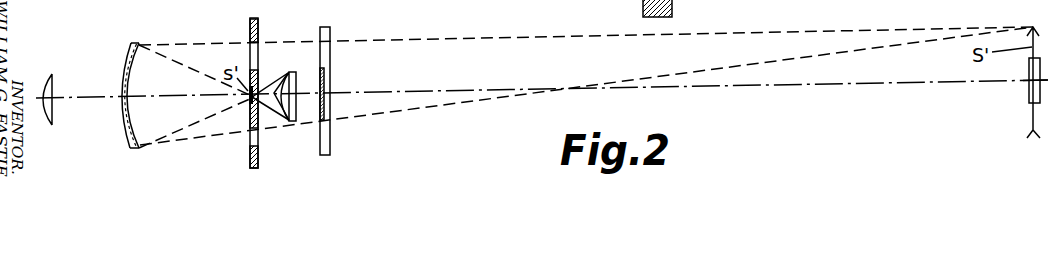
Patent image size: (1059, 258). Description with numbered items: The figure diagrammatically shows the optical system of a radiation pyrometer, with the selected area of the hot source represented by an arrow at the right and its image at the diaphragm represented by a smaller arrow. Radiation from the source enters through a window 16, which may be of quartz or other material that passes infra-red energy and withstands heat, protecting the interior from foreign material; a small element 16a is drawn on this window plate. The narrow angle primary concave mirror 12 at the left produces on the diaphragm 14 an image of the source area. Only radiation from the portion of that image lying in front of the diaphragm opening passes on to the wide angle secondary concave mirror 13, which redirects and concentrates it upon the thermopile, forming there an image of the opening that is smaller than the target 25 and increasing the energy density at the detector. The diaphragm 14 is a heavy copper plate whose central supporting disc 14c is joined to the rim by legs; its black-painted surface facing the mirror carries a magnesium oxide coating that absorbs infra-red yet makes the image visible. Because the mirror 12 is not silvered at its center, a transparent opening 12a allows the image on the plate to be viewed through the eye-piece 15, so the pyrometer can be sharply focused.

The concave mirror 12 is at (152, 95).
The transparent opening 12a is at (128, 101).
The concave mirror 13 is at (294, 122).
The diaphragm 14 is at (260, 84).
The central supporting disc 14c is at (258, 76).
The eye-piece 15 is at (48, 72).
The window 16 is at (350, 77).
The photosensitive element 16a is at (323, 78).
The target 25 is at (274, 93).